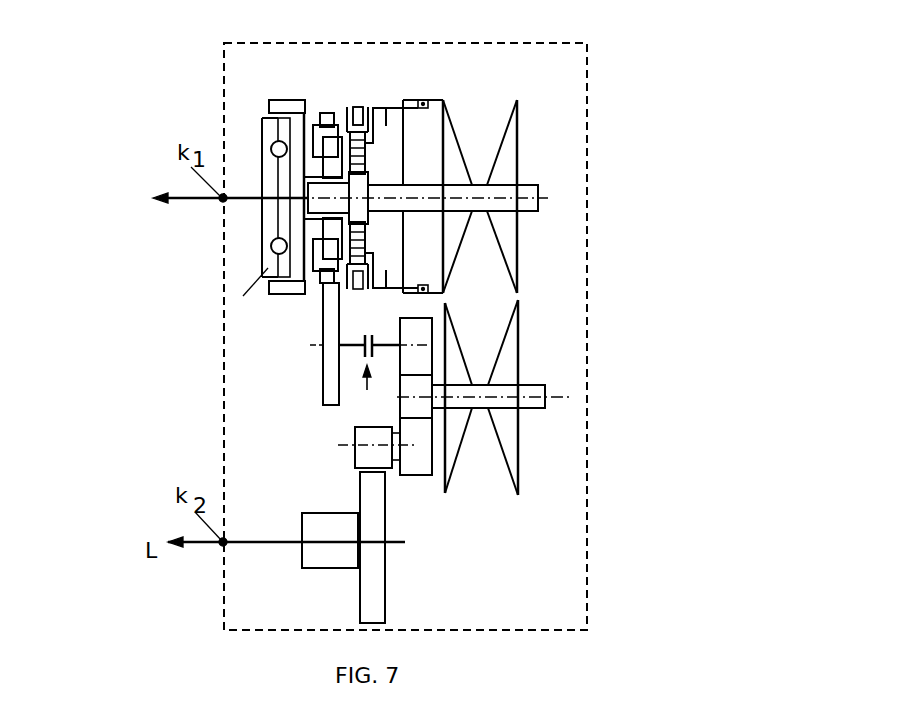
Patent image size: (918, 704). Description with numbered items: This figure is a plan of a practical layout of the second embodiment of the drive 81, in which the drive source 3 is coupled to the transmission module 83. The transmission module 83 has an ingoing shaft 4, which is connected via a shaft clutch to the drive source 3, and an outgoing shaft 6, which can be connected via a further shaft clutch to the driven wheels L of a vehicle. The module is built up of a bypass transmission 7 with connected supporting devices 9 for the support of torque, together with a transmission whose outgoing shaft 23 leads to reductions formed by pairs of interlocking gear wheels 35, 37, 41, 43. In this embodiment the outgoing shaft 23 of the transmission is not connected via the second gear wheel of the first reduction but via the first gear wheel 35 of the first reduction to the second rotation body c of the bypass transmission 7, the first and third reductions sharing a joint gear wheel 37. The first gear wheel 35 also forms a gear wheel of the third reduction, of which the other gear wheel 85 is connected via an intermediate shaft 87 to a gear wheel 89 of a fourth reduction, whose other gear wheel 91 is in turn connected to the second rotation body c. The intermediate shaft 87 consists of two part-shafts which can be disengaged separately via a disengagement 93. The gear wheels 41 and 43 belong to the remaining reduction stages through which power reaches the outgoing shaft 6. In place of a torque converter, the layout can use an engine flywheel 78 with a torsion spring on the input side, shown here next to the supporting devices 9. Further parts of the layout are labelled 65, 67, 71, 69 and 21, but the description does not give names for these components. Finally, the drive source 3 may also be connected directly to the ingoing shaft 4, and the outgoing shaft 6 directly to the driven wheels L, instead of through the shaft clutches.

The drive 81 is at (97, 98).
The transmission module 83 is at (493, 43).
The drive source 3 is at (221, 199).
The ingoing shaft 4 is at (222, 201).
The supporting devices 9 is at (282, 104).
The engine flywheel 78 is at (265, 172).
The bypass transmission 7 is at (329, 100).
The coupling sleeve 65 is at (356, 94).
The spring element 67 is at (358, 98).
The bracket 71 is at (380, 110).
The bearing housing 69 is at (403, 160).
The first pulley shaft 21 is at (532, 210).
The intermediate shaft 87 is at (348, 343).
The gear wheel of fourth reduction 91 is at (321, 287).
The gear wheel of fourth reduction 89 is at (328, 367).
The disengagement 93 is at (369, 390).
The gear wheel of third reduction 85 is at (418, 332).
The outgoing shaft of transmission 23 is at (542, 412).
The first gear wheel 35 is at (422, 405).
The joint gear wheel 37 is at (427, 457).
The gear wheel 41 is at (367, 457).
The gear wheel 43 is at (375, 568).
The outgoing shaft 6 is at (237, 545).